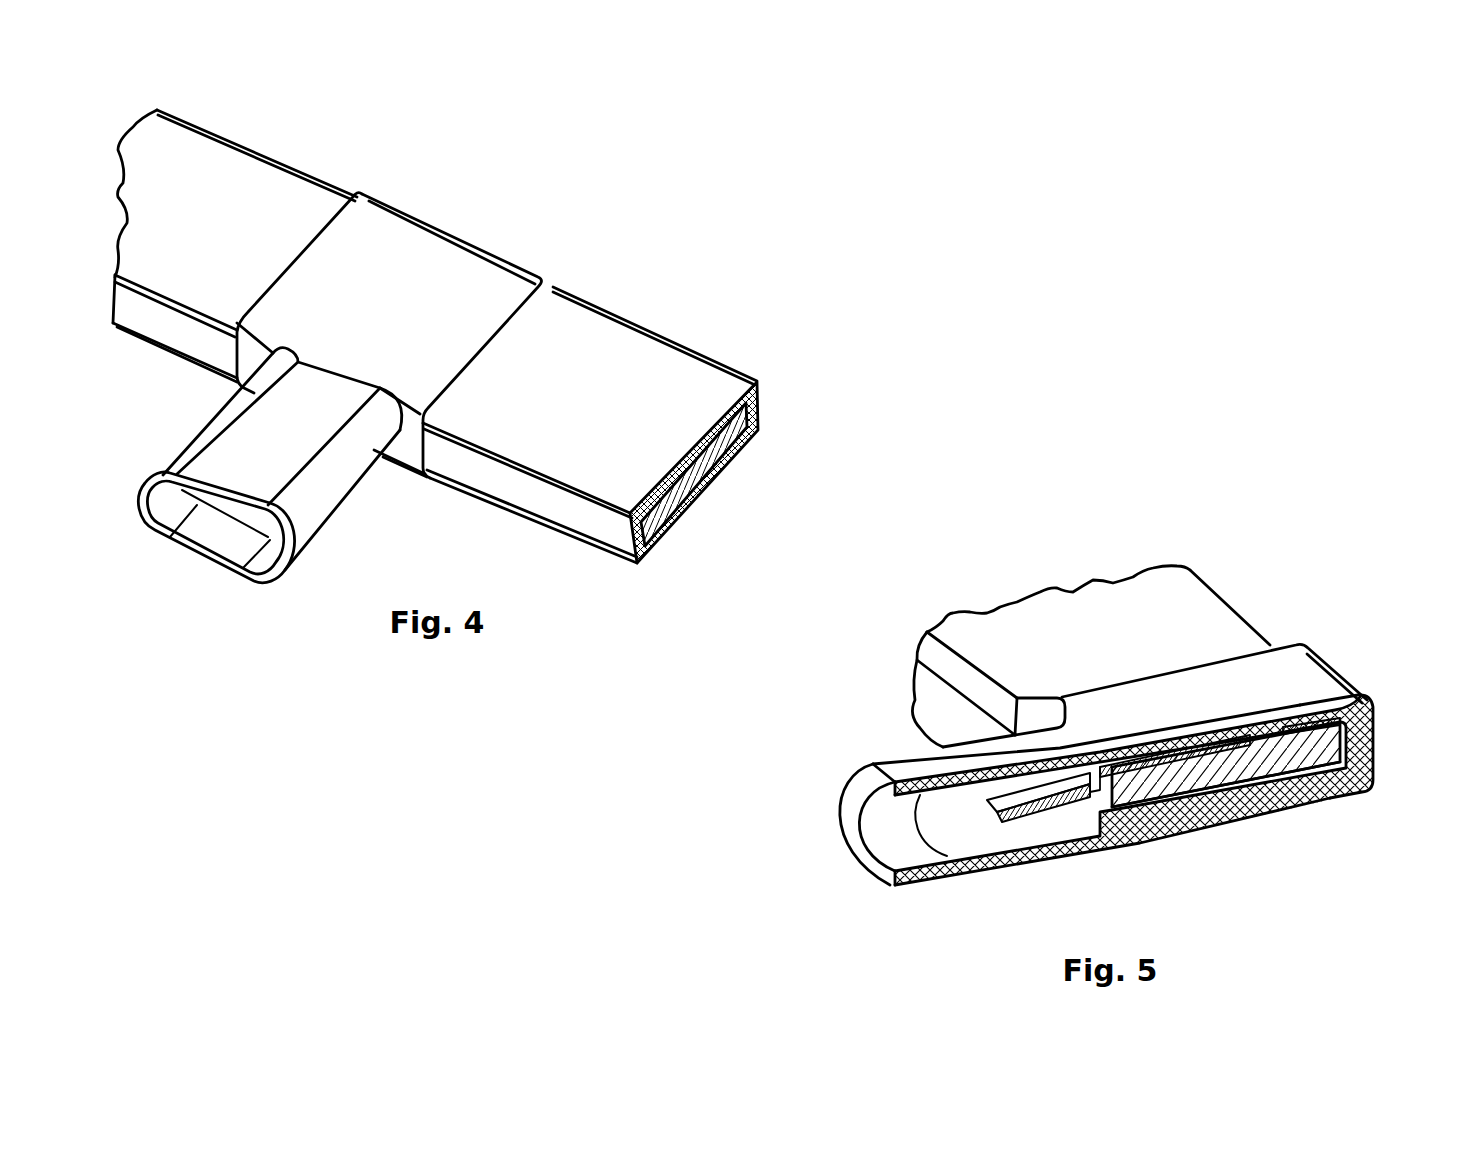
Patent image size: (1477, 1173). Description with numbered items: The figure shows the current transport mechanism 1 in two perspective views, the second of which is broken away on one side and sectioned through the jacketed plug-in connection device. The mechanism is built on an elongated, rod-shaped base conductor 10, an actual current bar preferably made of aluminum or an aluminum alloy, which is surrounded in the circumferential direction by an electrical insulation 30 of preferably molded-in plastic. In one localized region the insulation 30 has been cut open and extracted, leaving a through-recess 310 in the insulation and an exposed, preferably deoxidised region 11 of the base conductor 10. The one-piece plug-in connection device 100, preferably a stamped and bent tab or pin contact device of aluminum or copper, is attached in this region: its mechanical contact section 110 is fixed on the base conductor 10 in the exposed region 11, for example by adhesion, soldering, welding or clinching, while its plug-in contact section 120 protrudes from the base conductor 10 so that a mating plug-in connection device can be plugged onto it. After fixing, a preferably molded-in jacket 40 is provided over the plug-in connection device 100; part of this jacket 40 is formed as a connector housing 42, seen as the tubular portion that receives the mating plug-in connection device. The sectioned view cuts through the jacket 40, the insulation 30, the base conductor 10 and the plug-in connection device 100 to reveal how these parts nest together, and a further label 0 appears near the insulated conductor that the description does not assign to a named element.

In FIG. 4, the current transport mechanism 1 is at (212, 106).
In FIG. 5, the current transport mechanism 1 is at (1298, 522).
In FIG. 5, the cable body 0 is at (930, 700).
In FIG. 4, the base conductor 10 is at (707, 460).
In FIG. 5, the base conductor 10 is at (1320, 753).
In FIG. 5, the exposed region 11 is at (1263, 713).
In FIG. 4, the electrical insulation 30 is at (627, 347).
In FIG. 5, the electrical insulation 30 is at (1210, 625).
In FIG. 4, the jacket 40 is at (418, 258).
In FIG. 5, the jacket 40 is at (1310, 675).
In FIG. 4, the connector housing 42 is at (222, 440).
In FIG. 5, the connector housing 42 is at (880, 828).
In FIG. 5, the plug-in connection device 100 is at (1168, 744).
In FIG. 5, the contact section 110 is at (1187, 800).
In FIG. 5, the plug-in contact section 120 is at (1040, 810).
In FIG. 5, the through-recess 310 is at (1343, 688).